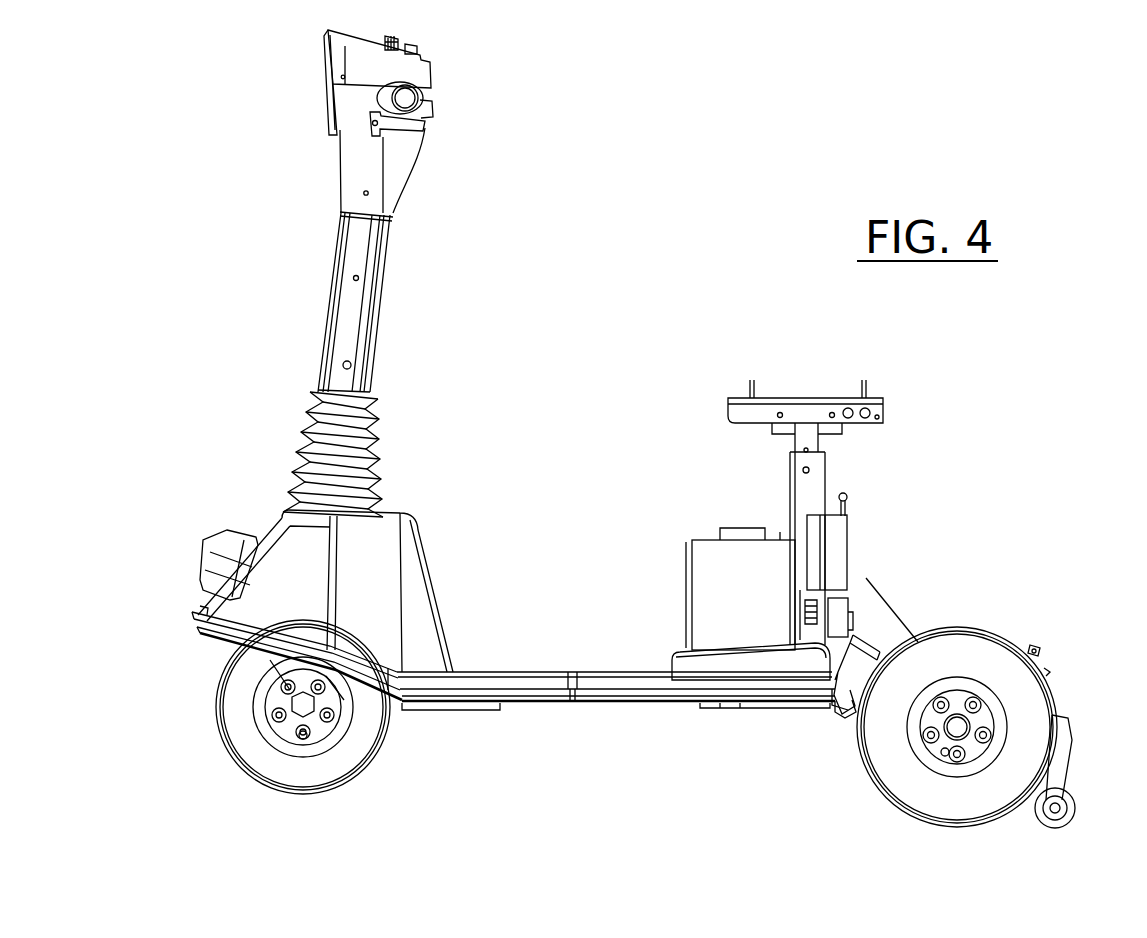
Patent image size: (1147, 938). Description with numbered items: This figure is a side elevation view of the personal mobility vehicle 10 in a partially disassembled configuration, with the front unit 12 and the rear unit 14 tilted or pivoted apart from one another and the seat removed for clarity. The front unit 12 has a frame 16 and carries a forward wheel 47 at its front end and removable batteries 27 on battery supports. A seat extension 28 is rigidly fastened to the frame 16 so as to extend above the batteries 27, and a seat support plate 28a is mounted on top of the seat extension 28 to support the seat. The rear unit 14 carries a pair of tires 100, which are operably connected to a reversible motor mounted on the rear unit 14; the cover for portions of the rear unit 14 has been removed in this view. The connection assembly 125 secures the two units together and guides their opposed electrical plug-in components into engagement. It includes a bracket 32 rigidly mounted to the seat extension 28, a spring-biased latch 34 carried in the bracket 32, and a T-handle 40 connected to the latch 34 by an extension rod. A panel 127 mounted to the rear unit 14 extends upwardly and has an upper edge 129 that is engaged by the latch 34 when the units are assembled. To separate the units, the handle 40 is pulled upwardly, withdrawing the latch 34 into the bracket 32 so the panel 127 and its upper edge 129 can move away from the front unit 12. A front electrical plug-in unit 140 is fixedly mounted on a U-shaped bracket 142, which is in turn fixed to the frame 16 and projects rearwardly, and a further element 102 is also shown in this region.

The personal mobility vehicle 10 is at (610, 333).
The front unit 12 is at (517, 666).
The rear unit 14 is at (1060, 692).
The frame 16 is at (604, 714).
The removable batteries 27 is at (719, 587).
The seat extension 28 is at (803, 495).
The seat support plate 28a is at (878, 398).
The bracket 32 is at (840, 530).
The latch 34 is at (836, 588).
The T-handle 40 is at (838, 495).
The forward wheel 47 is at (232, 755).
The tires 100 is at (933, 807).
The rear axle mount 102 is at (850, 706).
The connection assembly 125 is at (957, 661).
The panel 127 is at (855, 600).
The upper edge 129 is at (866, 578).
The front electrical plug-in unit 140 is at (845, 628).
The U-shaped bracket 142 is at (835, 612).